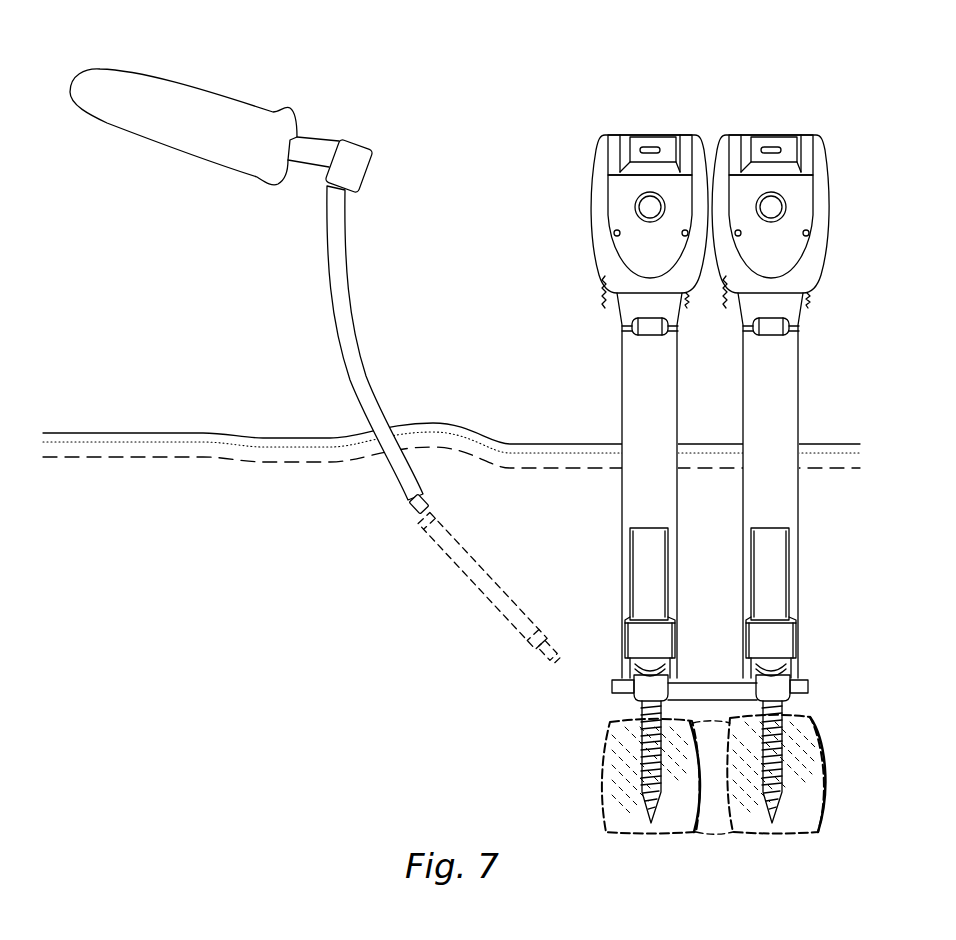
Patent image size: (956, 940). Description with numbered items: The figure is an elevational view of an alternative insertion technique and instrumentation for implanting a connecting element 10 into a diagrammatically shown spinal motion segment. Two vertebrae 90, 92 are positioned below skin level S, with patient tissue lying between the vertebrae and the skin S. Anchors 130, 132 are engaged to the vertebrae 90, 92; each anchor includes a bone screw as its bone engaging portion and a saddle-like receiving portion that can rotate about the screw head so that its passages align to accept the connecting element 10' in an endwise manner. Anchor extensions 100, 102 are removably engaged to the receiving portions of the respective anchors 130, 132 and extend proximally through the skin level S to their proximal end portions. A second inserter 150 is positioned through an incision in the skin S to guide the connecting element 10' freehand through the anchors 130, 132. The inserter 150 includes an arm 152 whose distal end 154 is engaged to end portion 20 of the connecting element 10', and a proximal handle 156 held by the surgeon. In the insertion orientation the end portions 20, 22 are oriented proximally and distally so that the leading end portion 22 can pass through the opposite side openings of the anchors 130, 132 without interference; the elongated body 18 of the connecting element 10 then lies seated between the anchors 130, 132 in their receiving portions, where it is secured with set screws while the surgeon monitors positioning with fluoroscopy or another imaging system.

The connecting element 10 is at (737, 650).
The connecting element 10' is at (485, 590).
The spinal rod 18 is at (700, 678).
The end portion 20 is at (613, 690).
The end portion 22 is at (806, 693).
The vertebra 90 is at (620, 807).
The vertebra 92 is at (787, 813).
The anchor extension 100 is at (615, 388).
The anchor extension 102 is at (805, 396).
The anchor 130 is at (630, 771).
The anchor 132 is at (799, 792).
The second inserter 150 is at (355, 102).
The arm 152 is at (349, 332).
The distal end 154 is at (413, 507).
The proximal handle 156 is at (185, 100).
The skin level S is at (222, 435).